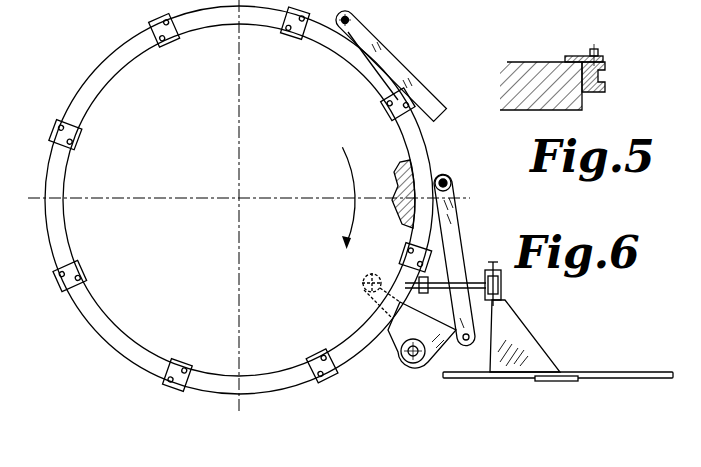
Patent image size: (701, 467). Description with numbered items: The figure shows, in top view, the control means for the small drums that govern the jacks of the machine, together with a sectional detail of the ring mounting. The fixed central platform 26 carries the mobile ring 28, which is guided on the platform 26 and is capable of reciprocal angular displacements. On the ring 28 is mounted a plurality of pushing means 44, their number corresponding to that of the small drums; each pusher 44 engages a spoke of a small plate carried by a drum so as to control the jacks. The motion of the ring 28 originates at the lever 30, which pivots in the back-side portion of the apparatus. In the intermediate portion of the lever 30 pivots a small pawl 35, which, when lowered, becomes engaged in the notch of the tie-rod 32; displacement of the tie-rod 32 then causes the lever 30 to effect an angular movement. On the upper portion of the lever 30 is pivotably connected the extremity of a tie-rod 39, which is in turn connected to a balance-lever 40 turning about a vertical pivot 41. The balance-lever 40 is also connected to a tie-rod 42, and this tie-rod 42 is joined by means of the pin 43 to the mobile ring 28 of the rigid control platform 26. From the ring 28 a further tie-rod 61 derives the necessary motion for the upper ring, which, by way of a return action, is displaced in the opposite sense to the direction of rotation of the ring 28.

In FIG. 6, the central platform 26 is at (116, 88).
In FIG. 5, the central platform 26 is at (525, 68).
In FIG. 6, the ring 28 is at (112, 335).
In FIG. 5, the ring 28 is at (603, 78).
In FIG. 6, the pushing means 44 is at (66, 126).
In FIG. 5, the pushing means 44 is at (569, 56).
In FIG. 6, the tie-rod 61 is at (385, 58).
In FIG. 6, the pin 43 is at (451, 183).
In FIG. 6, the tie-rod 42 is at (453, 233).
In FIG. 6, the tie-rod 39 is at (446, 290).
In FIG. 6, the balance-lever 40 is at (397, 345).
In FIG. 6, the vertical pivot 41 is at (415, 362).
In FIG. 6, the lever 30 is at (513, 330).
In FIG. 6, the tie-rod 32 is at (632, 373).
In FIG. 6, the small pawl 35 is at (552, 382).